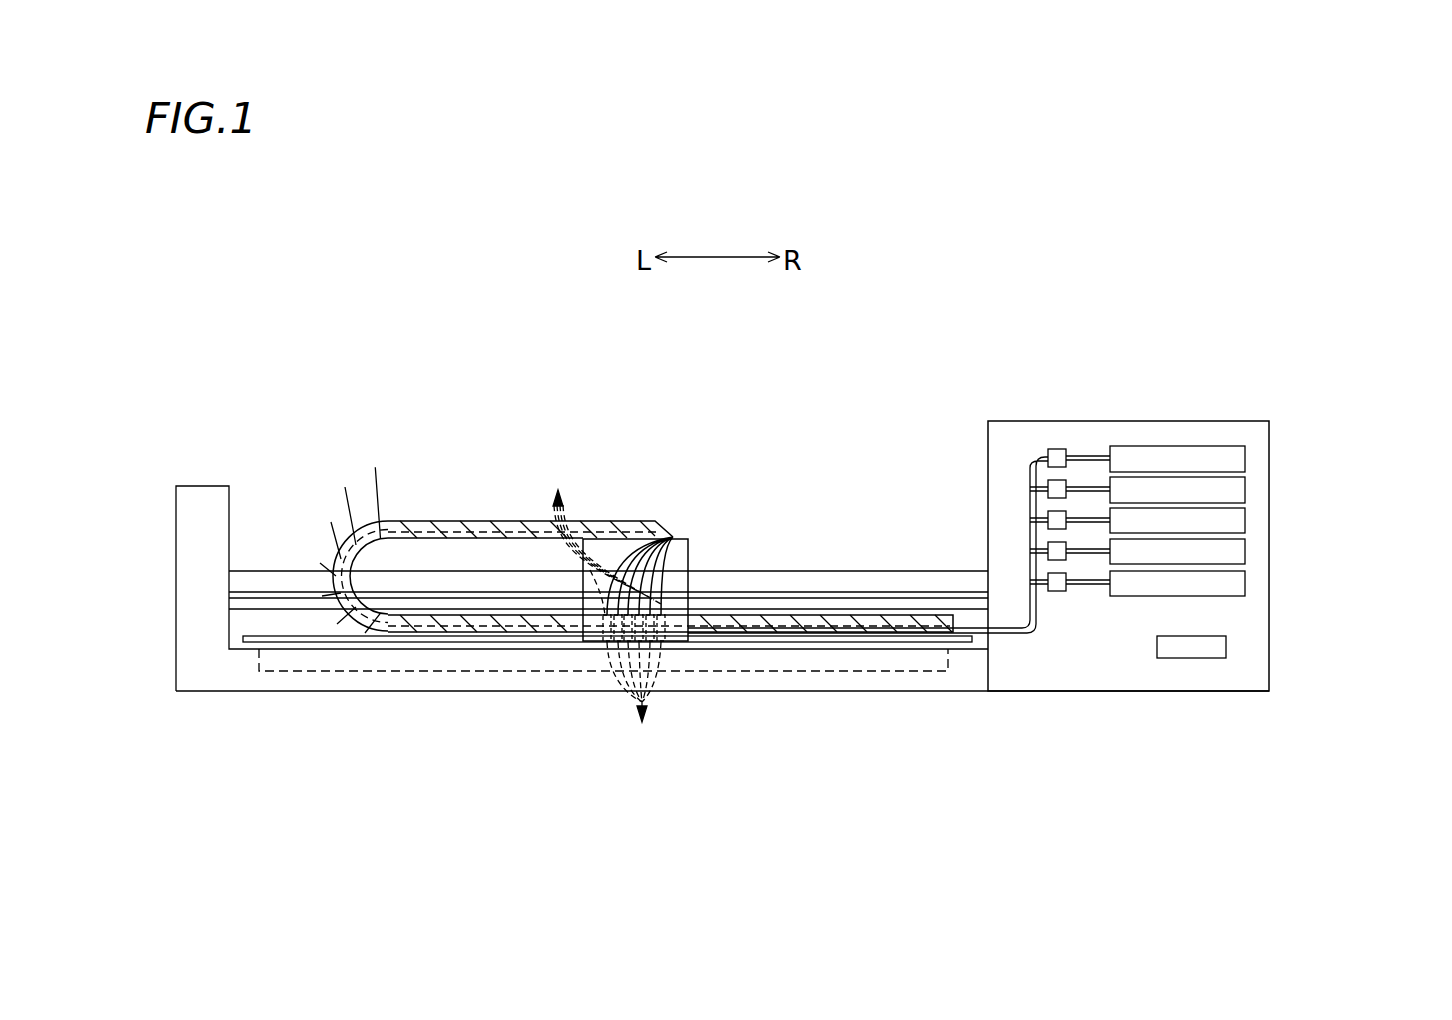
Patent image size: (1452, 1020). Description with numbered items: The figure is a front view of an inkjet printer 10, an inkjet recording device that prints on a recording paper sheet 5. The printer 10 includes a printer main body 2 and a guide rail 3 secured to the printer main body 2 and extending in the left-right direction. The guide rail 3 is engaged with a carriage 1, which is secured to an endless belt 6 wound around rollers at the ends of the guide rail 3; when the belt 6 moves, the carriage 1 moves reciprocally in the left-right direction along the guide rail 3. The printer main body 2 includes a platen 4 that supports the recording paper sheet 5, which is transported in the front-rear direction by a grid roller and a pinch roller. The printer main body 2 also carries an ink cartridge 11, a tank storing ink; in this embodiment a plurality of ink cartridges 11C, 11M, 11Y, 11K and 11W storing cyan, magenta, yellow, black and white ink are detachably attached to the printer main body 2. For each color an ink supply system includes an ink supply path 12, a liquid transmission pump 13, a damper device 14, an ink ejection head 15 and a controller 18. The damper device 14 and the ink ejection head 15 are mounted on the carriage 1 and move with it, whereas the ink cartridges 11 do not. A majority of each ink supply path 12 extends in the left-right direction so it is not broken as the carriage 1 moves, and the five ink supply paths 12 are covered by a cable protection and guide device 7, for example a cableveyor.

The carriage 1 is at (700, 642).
The printer main body 2 is at (1210, 420).
The guide rail 3 is at (907, 580).
The platen 4 is at (878, 680).
The recording paper sheet 5 is at (340, 671).
The endless belt 6 is at (838, 590).
The cable protection and guide device 7 is at (445, 522).
The inkjet printer 10 is at (840, 393).
The ink cartridge 11 is at (1367, 455).
The ink cartridge (white) 11W is at (1245, 455).
The ink cartridge (black) 11K is at (1245, 490).
The ink cartridge (yellow) 11Y is at (1245, 521).
The ink cartridge (magenta) 11M is at (1245, 556).
The ink cartridge (cyan) 11C is at (1245, 588).
The ink supply path 12 is at (743, 630).
The liquid transmission pump 13 is at (1047, 517).
The damper device 14 is at (601, 537).
The ink ejection head 15 is at (634, 700).
The controller 18 is at (1197, 658).